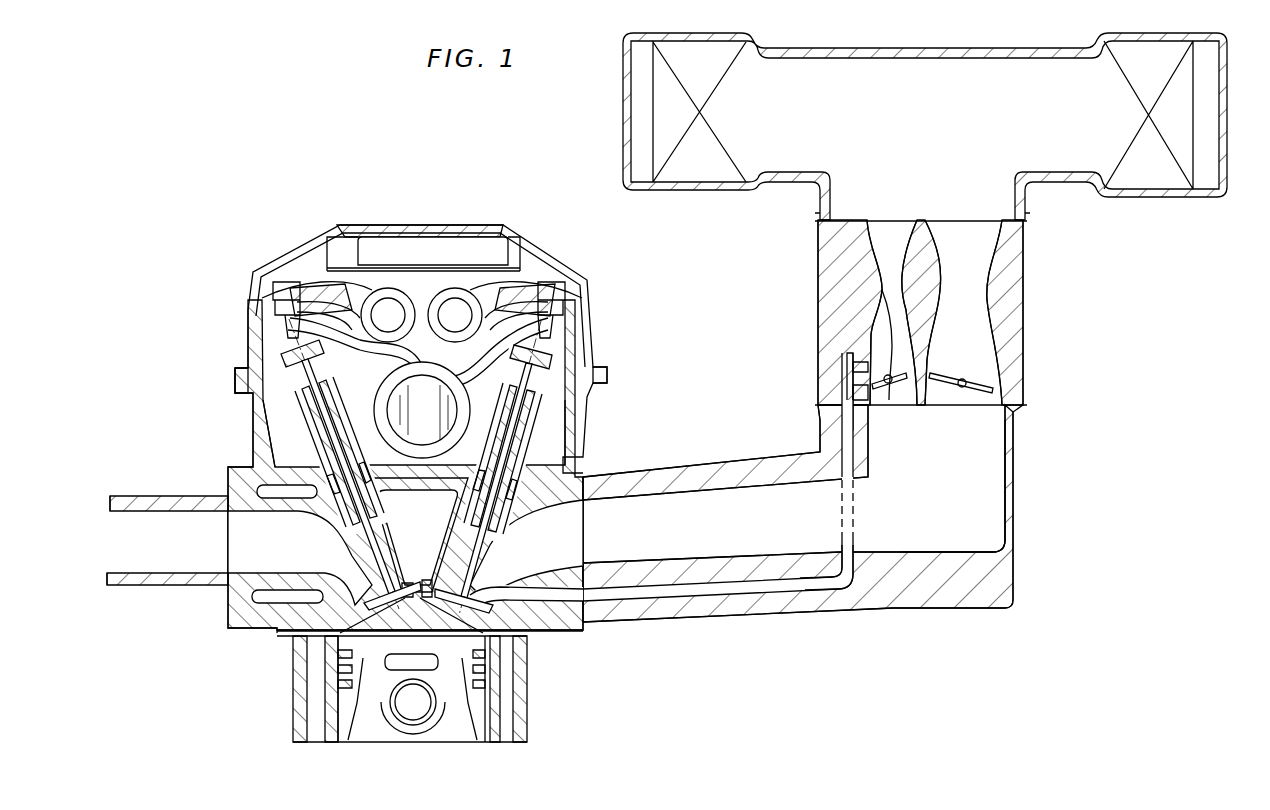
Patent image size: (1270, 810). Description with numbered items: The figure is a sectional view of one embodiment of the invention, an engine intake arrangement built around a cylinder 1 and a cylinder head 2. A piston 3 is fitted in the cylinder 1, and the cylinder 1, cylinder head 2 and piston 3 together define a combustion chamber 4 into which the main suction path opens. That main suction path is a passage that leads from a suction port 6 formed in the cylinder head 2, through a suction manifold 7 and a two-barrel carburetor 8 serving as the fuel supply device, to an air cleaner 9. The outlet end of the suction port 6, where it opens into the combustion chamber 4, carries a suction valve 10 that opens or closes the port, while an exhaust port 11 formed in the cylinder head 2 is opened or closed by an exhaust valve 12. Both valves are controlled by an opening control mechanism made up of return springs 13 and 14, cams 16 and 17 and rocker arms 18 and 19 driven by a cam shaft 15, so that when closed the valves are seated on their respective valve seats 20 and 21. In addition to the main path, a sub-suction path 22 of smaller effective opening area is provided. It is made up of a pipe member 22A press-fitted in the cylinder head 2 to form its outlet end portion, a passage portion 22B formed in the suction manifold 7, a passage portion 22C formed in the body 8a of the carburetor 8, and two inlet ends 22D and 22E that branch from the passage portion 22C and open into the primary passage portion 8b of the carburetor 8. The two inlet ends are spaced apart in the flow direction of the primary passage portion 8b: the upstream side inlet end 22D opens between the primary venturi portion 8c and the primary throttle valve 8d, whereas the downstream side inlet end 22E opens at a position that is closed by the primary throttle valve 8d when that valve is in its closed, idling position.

The cylinder 1 is at (293, 726).
The cylinder head 2 is at (230, 470).
The piston 3 is at (395, 737).
The combustion chamber 4 is at (387, 632).
The suction port 6 is at (575, 544).
The suction manifold 7 is at (1005, 616).
The two-barrel carburetor 8 is at (917, 312).
The body of the carburetor 8a is at (1012, 310).
The primary passage portion 8b is at (875, 335).
The primary venturi portion 8c is at (887, 288).
The primary throttle valve 8d is at (880, 318).
The air cleaner 9 is at (1053, 52).
The suction valve 10 is at (477, 617).
The exhaust port 11 is at (228, 572).
The exhaust valve 12 is at (372, 584).
The return spring 13 is at (583, 372).
The return spring 14 is at (280, 388).
The cam shaft 15 is at (402, 392).
The cam 16 is at (470, 400).
The cam 17 is at (403, 408).
The rocker arm 18 is at (525, 300).
The rocker arm 19 is at (315, 297).
The valve seat 20 is at (523, 652).
The valve seat 21 is at (350, 607).
The sub-suction path 22 is at (727, 594).
The pipe member 22A is at (560, 632).
The passage portion 22B is at (790, 588).
The passage portion 22C is at (853, 368).
The upstream side inlet end 22D is at (847, 355).
The downstream side inlet end 22E is at (853, 392).